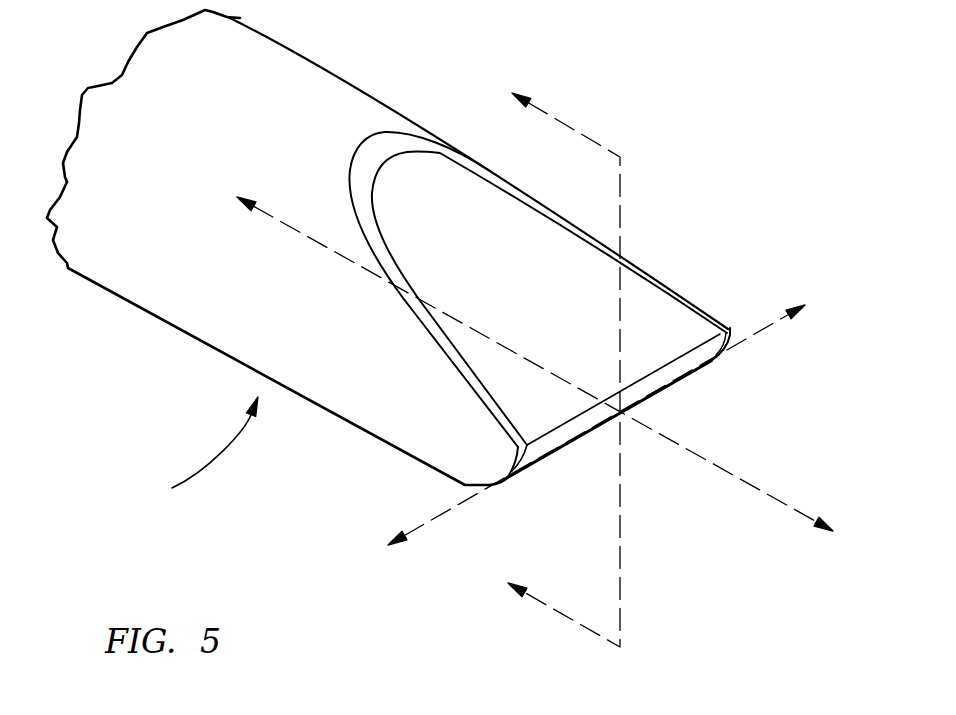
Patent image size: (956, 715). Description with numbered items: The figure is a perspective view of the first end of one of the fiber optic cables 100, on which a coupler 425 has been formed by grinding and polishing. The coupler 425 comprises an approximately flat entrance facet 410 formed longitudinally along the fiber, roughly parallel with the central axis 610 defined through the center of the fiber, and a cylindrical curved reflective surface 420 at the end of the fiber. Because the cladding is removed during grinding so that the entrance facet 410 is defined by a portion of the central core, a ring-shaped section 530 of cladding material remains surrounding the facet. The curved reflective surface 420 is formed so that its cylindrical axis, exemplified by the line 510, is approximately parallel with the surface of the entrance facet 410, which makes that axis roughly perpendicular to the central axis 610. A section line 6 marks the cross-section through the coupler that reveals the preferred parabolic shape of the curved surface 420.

The fiber optic cable 100 is at (273, 336).
The entrance facet 410 is at (497, 227).
The ring-shaped section of cladding material 530 is at (380, 138).
The cylindrical curved reflective surface 420 is at (570, 430).
The line exemplifying the cylindrical axis 510 is at (436, 521).
The central axis 610 is at (717, 470).
The coupler 425 is at (190, 453).
The section line 6- 6 is at (553, 360).